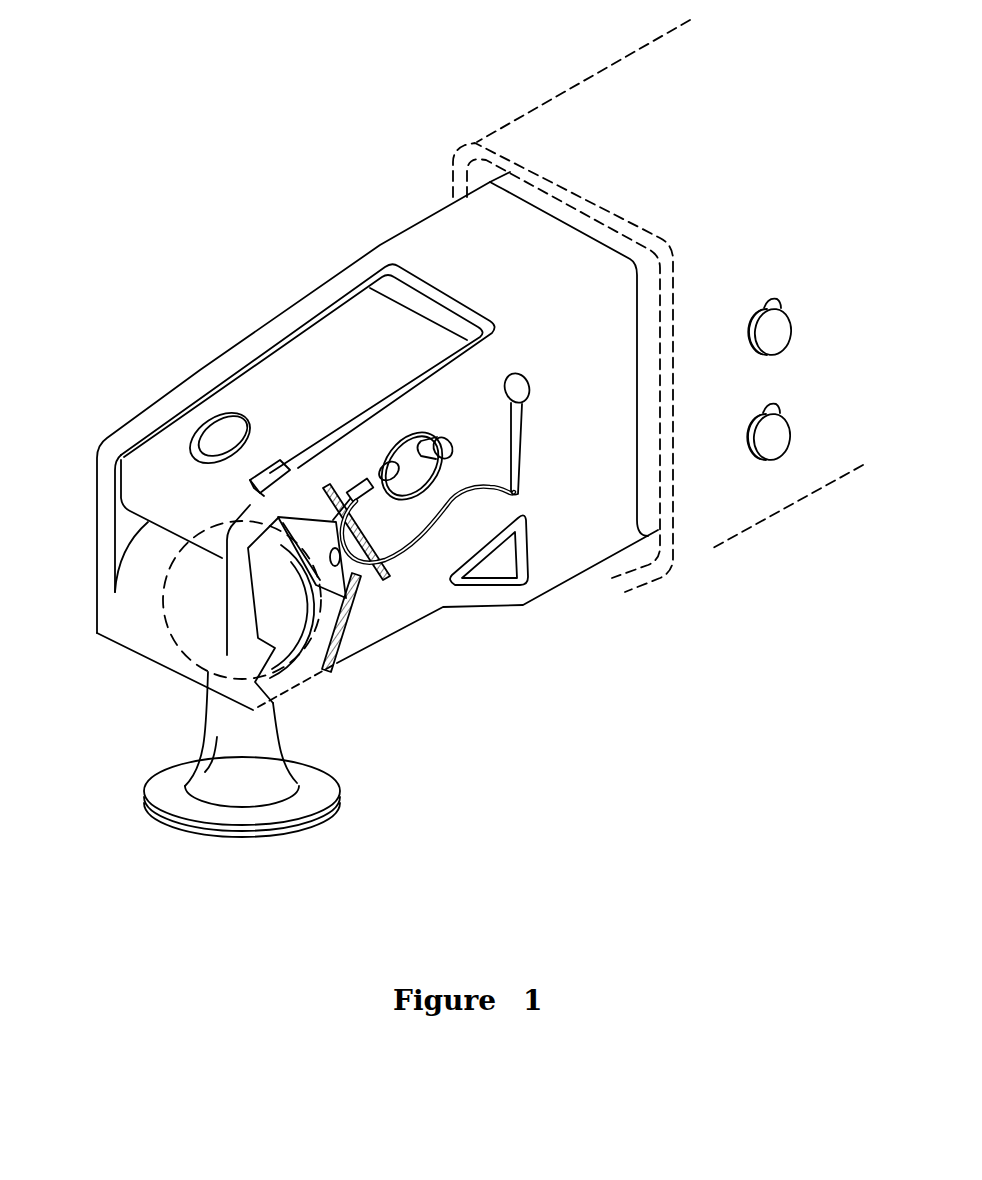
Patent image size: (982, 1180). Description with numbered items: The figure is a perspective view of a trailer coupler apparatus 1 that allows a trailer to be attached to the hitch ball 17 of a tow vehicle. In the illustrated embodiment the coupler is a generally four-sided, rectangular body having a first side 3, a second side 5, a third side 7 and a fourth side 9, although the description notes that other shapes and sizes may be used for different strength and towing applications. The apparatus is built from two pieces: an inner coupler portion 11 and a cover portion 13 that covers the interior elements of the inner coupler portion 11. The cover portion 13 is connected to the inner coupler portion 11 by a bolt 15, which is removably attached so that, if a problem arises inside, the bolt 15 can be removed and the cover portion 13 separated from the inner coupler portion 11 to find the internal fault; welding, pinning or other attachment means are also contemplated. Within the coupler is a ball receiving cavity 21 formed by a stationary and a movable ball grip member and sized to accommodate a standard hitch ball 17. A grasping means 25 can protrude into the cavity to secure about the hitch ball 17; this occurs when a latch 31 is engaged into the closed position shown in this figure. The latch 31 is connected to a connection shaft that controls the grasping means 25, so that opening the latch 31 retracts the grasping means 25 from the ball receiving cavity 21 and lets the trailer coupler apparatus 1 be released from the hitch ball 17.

The trailer coupler apparatus 1 is at (238, 192).
The first side 3 is at (111, 392).
The second side 5 is at (78, 532).
The third side 7 is at (550, 543).
The fourth side 9 is at (789, 113).
The inner coupler portion 11 is at (190, 373).
The cover portion 13 is at (533, 112).
The bolt 15 is at (768, 328).
The hitch ball 17 is at (278, 622).
The ball receiving cavity 21 is at (360, 625).
The grasping means 25 is at (352, 587).
The latch 31 is at (292, 362).